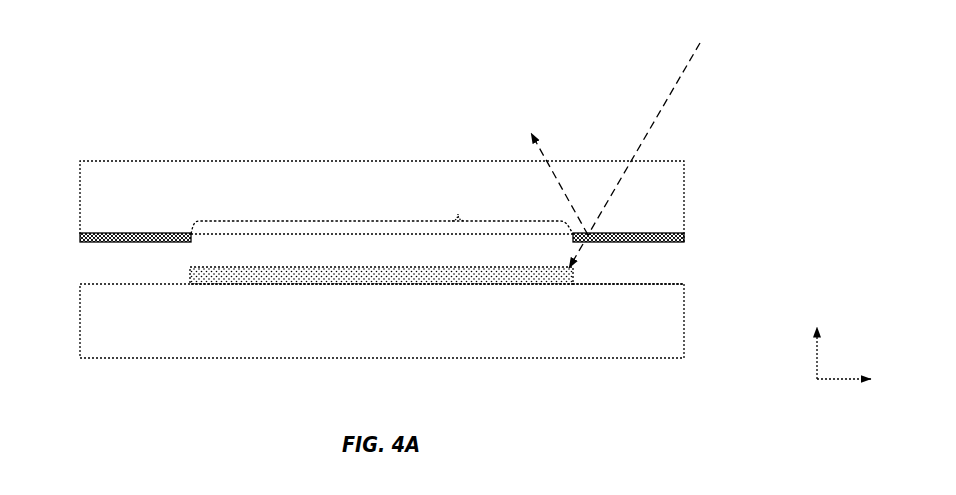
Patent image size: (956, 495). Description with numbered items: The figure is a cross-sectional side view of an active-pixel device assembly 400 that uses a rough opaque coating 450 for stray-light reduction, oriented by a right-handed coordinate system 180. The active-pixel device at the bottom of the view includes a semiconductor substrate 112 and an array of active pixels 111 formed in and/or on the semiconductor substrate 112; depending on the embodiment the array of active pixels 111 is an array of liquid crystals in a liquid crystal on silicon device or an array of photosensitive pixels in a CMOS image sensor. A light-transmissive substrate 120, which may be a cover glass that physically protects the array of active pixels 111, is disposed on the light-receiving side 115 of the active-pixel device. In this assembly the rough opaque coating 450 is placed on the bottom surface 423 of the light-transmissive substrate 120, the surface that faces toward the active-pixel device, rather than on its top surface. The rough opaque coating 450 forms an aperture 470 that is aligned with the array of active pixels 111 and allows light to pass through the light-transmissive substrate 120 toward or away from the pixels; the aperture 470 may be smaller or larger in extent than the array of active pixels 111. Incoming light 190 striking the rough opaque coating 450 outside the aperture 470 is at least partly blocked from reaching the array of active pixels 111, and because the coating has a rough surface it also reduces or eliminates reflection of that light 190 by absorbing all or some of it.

The active-pixel device assembly 400 is at (101, 78).
The rough opaque coating 450 is at (170, 233).
The bottom surface 423 is at (289, 230).
The aperture 470 is at (458, 202).
The light-transmissive substrate 120 is at (382, 201).
The array of active pixels 111 is at (188, 277).
The semiconductor substrate 112 is at (382, 321).
The light-receiving side 115 is at (657, 280).
The incoming light 190 is at (616, 155).
The right-handed coordinate system 180 is at (817, 412).